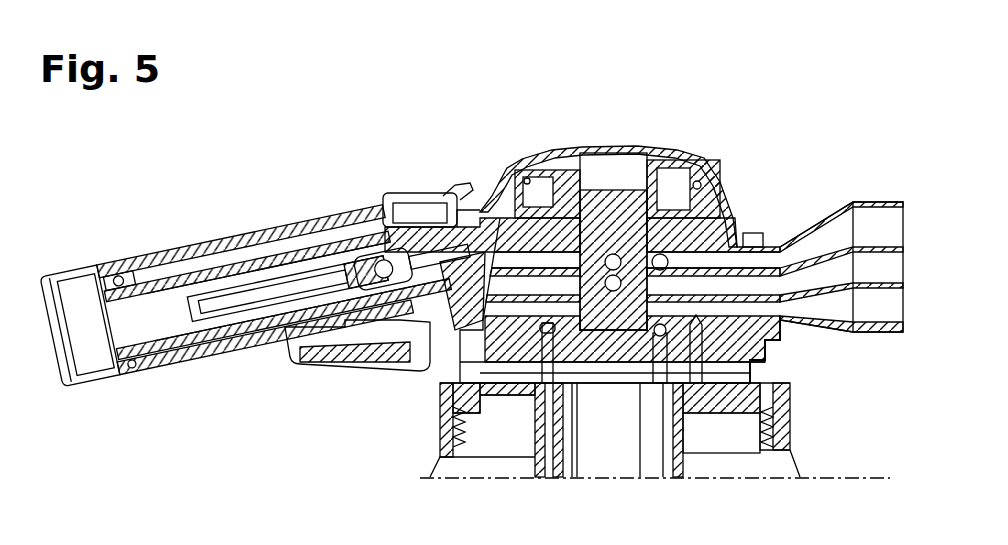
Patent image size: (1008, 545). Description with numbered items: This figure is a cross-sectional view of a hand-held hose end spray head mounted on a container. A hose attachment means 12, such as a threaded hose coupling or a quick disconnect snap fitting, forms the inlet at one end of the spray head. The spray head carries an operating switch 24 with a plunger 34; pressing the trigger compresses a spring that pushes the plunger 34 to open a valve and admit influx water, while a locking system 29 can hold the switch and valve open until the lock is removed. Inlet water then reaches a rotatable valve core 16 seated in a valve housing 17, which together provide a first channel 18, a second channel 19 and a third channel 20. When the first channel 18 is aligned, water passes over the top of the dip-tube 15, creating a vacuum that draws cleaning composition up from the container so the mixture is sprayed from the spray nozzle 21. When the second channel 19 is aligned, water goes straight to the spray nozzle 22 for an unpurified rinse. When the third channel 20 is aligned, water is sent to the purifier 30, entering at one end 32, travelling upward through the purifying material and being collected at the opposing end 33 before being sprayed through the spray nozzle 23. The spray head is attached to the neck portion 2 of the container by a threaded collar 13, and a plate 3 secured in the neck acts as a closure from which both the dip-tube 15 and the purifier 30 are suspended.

The neck portion 2 is at (723, 440).
The plate 3 is at (740, 372).
The means of attaching the spray head to a hose 12 is at (80, 347).
The threaded collar 13 is at (783, 407).
The dip-tube 15 is at (753, 327).
The valve core 16 is at (640, 255).
The valve housing 17 is at (550, 190).
The first channel 18 is at (587, 312).
The second channel 19 is at (612, 240).
The third channel 20 is at (617, 285).
The spray nozzle 21 is at (890, 313).
The spray nozzle 22 is at (880, 263).
The spray nozzle 23 is at (863, 222).
The operating switch 24 is at (333, 340).
The locking system 29 is at (440, 200).
The purifier 30 is at (617, 463).
The one end of the purifier 32 is at (552, 335).
The opposing end 33 is at (658, 360).
The plunger 34 is at (260, 297).